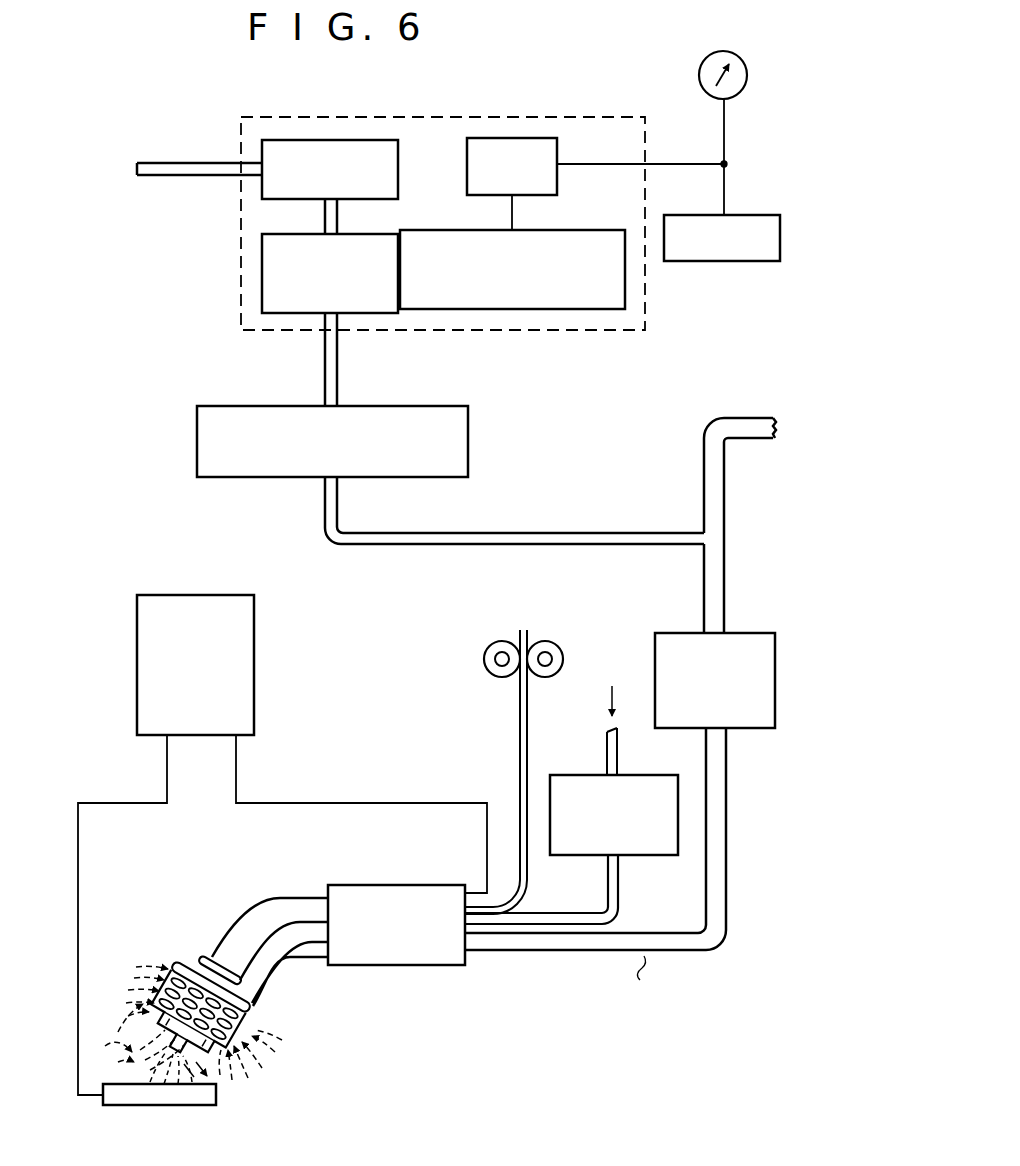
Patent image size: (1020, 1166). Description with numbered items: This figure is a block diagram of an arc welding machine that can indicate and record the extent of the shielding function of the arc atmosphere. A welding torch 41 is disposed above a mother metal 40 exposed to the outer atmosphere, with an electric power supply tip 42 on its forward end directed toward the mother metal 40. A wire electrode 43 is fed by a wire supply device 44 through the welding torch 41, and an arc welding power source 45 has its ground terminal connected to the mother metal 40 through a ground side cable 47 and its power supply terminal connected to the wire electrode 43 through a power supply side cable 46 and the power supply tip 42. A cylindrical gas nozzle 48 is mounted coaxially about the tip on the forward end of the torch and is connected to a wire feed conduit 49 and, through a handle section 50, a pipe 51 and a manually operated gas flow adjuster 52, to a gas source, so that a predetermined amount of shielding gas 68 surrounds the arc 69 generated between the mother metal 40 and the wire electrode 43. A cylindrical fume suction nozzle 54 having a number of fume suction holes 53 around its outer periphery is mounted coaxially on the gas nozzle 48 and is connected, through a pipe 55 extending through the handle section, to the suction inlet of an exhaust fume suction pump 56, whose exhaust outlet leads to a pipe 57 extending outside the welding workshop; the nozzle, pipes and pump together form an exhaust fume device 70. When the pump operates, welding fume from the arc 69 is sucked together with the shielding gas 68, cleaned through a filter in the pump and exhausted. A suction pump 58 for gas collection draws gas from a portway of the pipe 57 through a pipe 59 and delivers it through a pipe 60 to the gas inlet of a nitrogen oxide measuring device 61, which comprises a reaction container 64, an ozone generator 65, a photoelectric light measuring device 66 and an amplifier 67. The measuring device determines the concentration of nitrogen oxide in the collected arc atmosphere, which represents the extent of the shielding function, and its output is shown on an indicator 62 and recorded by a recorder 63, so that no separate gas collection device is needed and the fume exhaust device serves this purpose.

The mother metal 40 is at (186, 1105).
The welding torch 41 is at (237, 910).
The electric power supply tip 42 is at (135, 999).
The wire electrode 43 is at (520, 740).
The wire supply device 44 is at (487, 665).
The arc welding power source 45 is at (254, 663).
The power supply side cable 46 is at (320, 803).
The ground side cable 47 is at (78, 881).
The gas nozzle 48 is at (164, 1018).
The wire feed conduit 49 is at (264, 897).
The handle section 50 is at (392, 885).
The pipe 51 is at (556, 898).
The gas flow adjuster 52 is at (581, 775).
The fume suction holes 53 is at (245, 1012).
The fume suction nozzle 54 is at (250, 1055).
The pipe 55 is at (522, 954).
The exhaust fume suction pump 56 is at (746, 633).
The pipe 57 is at (724, 497).
The suction pump for gas collection 58 is at (468, 431).
The pipe 59 is at (546, 533).
The pipe 60 is at (337, 367).
The nitrogen oxide measuring device 61 is at (645, 318).
The indicator 62 is at (738, 55).
The recorder 63 is at (742, 215).
The reaction container 64 is at (262, 282).
The ozone generator 65 is at (327, 140).
The photoelectric light measuring device 66 is at (576, 309).
The amplifier 67 is at (521, 138).
The shielding gas 68 is at (136, 1053).
The arc 69 is at (160, 1076).
The exhaust fume device 70 is at (652, 949).